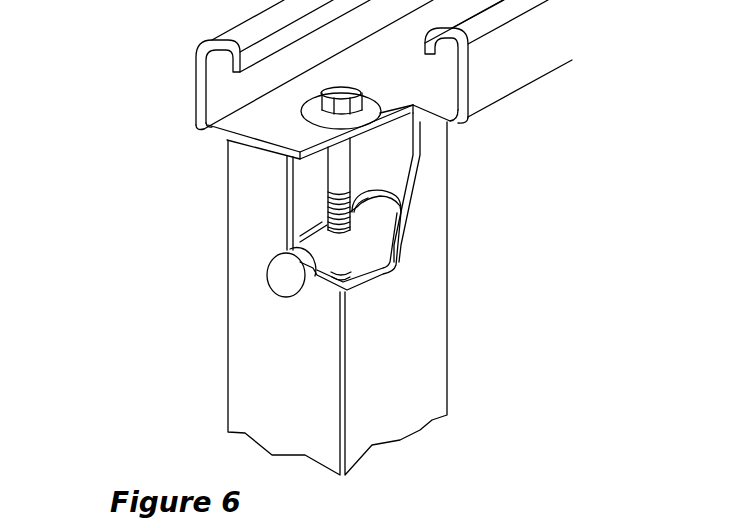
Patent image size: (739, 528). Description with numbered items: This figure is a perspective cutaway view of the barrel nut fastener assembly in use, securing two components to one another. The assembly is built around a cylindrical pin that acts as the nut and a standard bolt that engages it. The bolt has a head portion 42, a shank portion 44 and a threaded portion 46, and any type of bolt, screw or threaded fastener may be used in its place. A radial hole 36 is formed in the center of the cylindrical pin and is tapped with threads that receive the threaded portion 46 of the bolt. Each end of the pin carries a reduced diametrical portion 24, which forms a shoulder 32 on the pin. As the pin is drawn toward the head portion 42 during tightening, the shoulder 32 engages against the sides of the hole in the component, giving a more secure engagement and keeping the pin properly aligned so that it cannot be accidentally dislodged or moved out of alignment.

The head portion 42 is at (323, 107).
The shank portion 44 is at (328, 172).
The threaded portion 46 is at (363, 213).
The radial hole 36 is at (363, 242).
The shoulder 32 is at (313, 273).
The reduced diametrical portion 24 is at (287, 270).